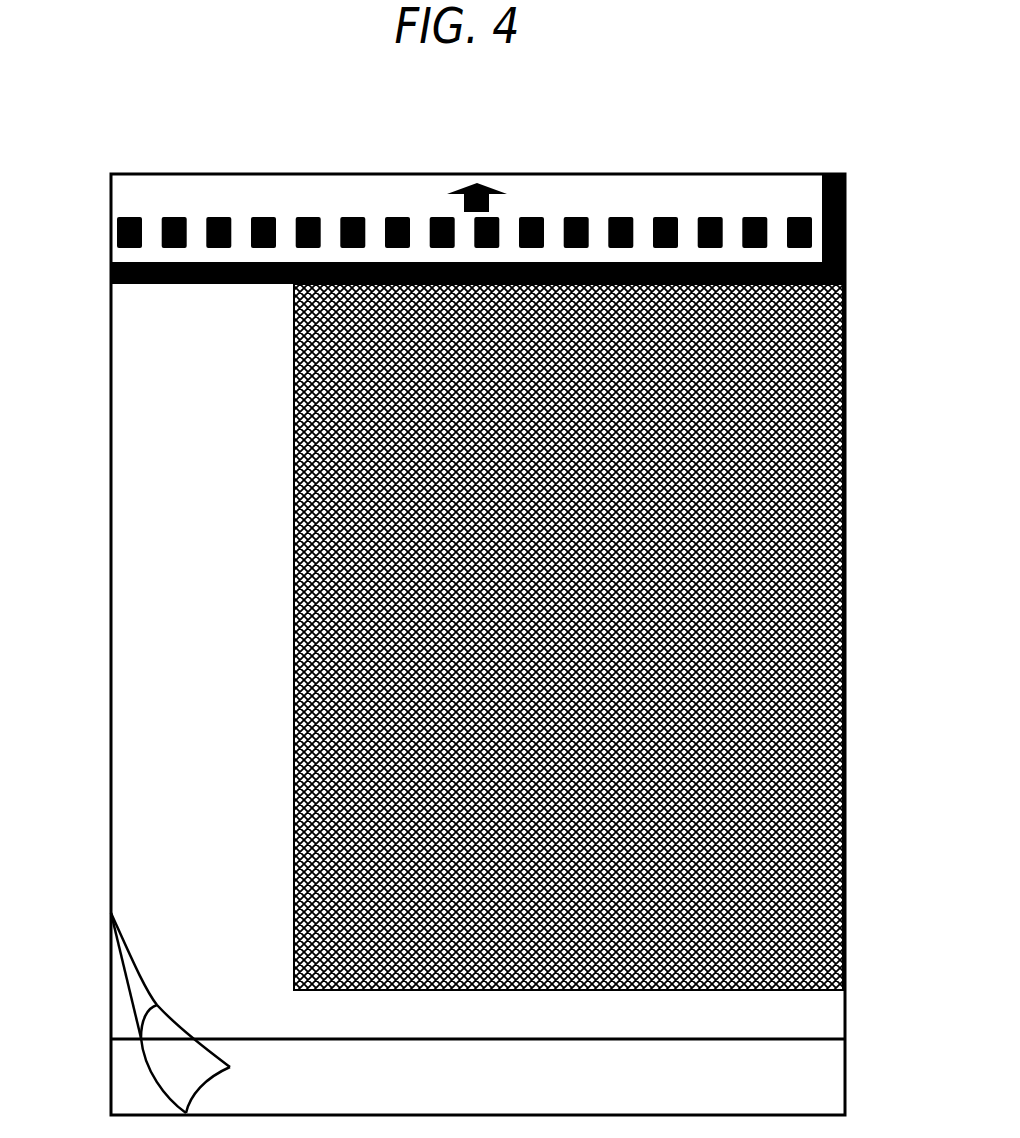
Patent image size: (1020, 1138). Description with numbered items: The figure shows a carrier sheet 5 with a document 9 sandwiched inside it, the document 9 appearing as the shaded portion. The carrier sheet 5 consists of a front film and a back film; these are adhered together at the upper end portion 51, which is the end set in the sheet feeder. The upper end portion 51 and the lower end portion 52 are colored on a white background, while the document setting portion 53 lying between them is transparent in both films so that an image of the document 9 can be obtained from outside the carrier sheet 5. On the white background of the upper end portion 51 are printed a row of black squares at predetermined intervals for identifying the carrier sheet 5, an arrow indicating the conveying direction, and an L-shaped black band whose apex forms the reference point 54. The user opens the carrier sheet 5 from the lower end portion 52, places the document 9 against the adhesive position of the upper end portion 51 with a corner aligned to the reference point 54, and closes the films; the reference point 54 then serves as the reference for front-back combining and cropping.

The carrier sheet 5 is at (608, 173).
The upper end portion 51 is at (98, 174).
The lower end portion 52 is at (98, 1041).
The document setting portion 53 is at (98, 288).
The reference point 54 is at (845, 289).
The document 9 is at (792, 588).